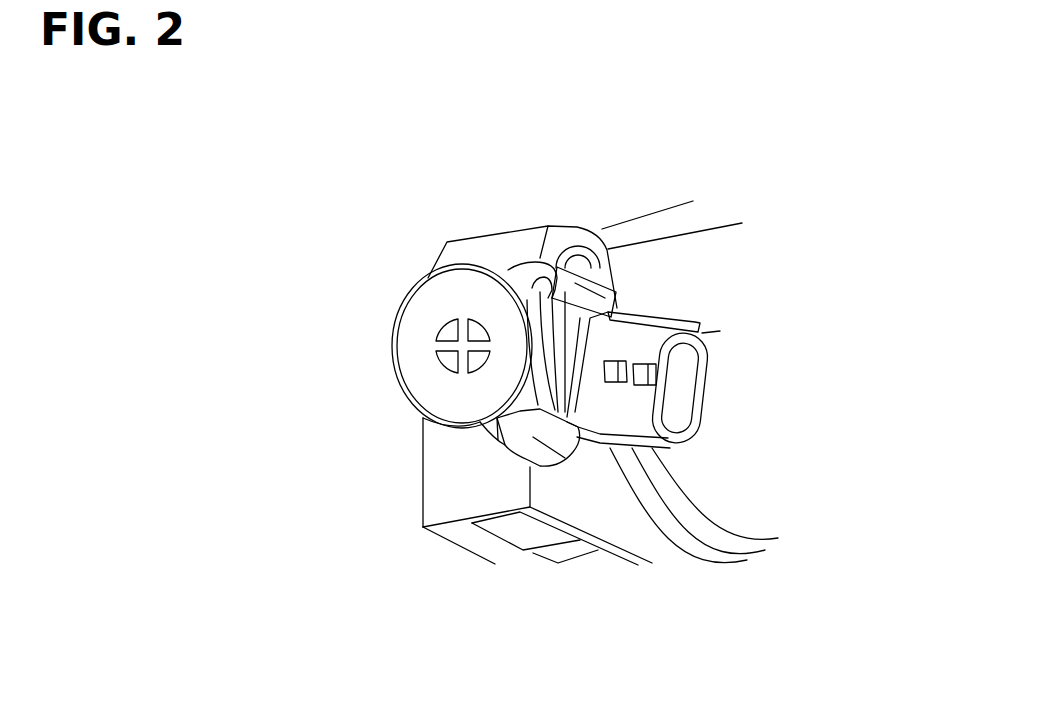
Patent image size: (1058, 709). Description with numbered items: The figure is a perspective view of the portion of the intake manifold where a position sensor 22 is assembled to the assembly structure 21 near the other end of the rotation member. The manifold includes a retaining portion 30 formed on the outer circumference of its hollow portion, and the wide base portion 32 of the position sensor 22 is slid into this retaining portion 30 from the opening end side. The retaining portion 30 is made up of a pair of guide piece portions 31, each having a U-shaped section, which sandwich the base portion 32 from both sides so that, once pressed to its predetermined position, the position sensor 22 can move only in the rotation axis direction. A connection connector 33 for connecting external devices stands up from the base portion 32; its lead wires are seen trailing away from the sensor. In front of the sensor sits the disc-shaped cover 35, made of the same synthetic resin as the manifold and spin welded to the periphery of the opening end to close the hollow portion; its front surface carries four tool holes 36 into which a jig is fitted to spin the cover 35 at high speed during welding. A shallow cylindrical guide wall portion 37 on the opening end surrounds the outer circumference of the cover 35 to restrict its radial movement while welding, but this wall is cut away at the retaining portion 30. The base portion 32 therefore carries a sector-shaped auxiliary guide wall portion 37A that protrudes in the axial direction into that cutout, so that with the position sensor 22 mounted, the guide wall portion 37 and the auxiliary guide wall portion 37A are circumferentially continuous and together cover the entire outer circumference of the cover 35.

The assembly structure 21 is at (387, 377).
The position sensor 22 is at (612, 408).
The retaining portion 30 is at (527, 447).
The guide piece portions 31 is at (605, 246).
The base portion 32 is at (572, 274).
The connection connector 33 is at (645, 330).
The cover 35 is at (460, 284).
The tool holes 36 is at (445, 330).
The guide wall portion 37 is at (393, 340).
The auxiliary guide wall portion 37A is at (498, 440).